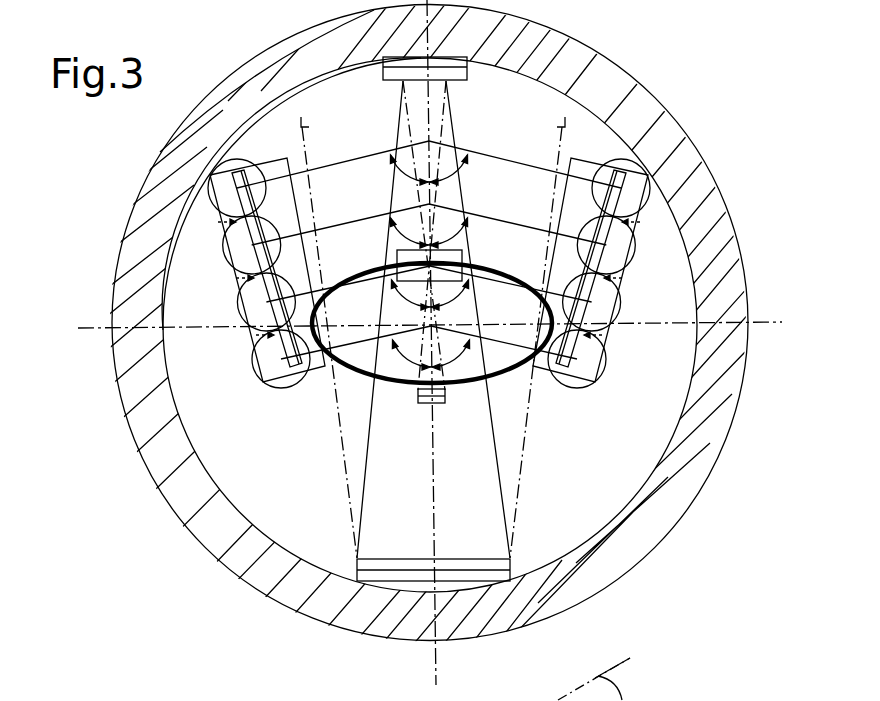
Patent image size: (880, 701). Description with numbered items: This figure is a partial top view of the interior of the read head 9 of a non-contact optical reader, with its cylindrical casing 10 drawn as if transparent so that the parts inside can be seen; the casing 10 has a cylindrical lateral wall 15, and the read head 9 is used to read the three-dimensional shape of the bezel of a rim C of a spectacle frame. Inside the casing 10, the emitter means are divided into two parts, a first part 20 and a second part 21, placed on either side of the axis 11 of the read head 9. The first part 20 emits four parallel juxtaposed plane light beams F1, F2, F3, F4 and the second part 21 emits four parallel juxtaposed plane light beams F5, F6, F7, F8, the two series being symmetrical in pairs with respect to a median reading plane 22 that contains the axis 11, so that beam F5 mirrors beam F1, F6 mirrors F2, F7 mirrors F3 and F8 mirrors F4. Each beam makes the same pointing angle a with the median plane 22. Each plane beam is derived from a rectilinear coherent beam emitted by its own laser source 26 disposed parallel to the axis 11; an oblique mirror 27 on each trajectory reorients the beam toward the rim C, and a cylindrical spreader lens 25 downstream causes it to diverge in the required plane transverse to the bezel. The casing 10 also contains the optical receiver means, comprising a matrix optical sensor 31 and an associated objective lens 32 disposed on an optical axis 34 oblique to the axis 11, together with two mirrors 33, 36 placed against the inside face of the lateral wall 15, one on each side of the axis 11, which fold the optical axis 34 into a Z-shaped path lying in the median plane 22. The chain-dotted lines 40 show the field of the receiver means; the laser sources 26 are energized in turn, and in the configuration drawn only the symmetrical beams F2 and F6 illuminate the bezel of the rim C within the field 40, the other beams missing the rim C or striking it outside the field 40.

The read head 9 is at (163, 556).
The cylindrical casing 10 is at (250, 591).
The axis of the read head 11 is at (438, 327).
The cylindrical lateral wall 15 is at (712, 468).
The first part of the emitter means 20 is at (258, 394).
The second part of the emitter means 21 is at (600, 394).
The median reading plane 22 is at (436, 665).
The cylindrical spreader lens 25 is at (322, 368).
The laser source 26 is at (255, 350).
The oblique mirror 27 is at (279, 386).
The matrix optical sensor 31 is at (425, 404).
The objective lens 32 is at (397, 256).
The mirror 33 is at (468, 83).
The optical axis 34 is at (402, 130).
The mirror 36 is at (402, 557).
The field of the optical receiver means 40 is at (306, 124).
The plane light beam F1 is at (354, 333).
The plane light beam F2 is at (340, 277).
The plane light beam F3 is at (360, 216).
The plane light beam F4 is at (356, 160).
The plane light beam F5 is at (512, 342).
The plane light beam F6 is at (524, 277).
The plane light beam F7 is at (505, 216).
The plane light beam F8 is at (510, 160).
The pointing angle a is at (392, 181).
The rim C is at (477, 392).